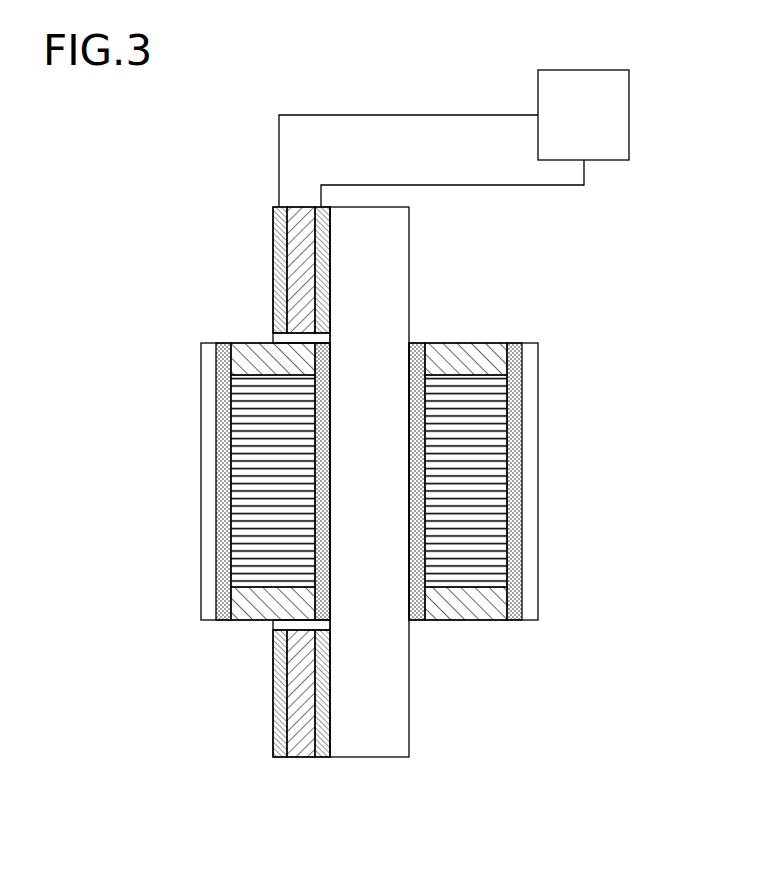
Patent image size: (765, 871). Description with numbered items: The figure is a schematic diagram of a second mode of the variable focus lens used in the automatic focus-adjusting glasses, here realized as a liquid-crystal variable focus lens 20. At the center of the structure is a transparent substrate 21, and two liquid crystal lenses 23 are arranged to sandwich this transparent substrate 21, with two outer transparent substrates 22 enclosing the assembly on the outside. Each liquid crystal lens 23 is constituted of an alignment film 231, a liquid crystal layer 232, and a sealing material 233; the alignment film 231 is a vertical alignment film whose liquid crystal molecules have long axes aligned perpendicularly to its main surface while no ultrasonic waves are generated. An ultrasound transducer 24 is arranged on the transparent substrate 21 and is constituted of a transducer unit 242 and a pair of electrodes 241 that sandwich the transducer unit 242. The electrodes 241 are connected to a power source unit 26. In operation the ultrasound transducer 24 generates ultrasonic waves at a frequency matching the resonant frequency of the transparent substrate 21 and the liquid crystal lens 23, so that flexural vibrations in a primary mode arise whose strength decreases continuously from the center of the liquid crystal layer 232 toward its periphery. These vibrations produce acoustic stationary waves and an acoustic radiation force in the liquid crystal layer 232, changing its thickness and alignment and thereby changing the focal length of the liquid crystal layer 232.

The liquid-crystal variable focus lens 20 is at (72, 169).
The transparent substrate 21 is at (393, 760).
The outer transparent substrate 22 is at (201, 560).
The liquid crystal lens 23 is at (362, 485).
The alignment film 231 is at (222, 360).
The liquid crystal layer 232 is at (272, 510).
The sealing material 233 is at (249, 343).
The ultrasound transducer 24 is at (256, 476).
The electrode 241 is at (272, 206).
The transducer unit 242 is at (298, 232).
The power source unit 26 is at (631, 115).